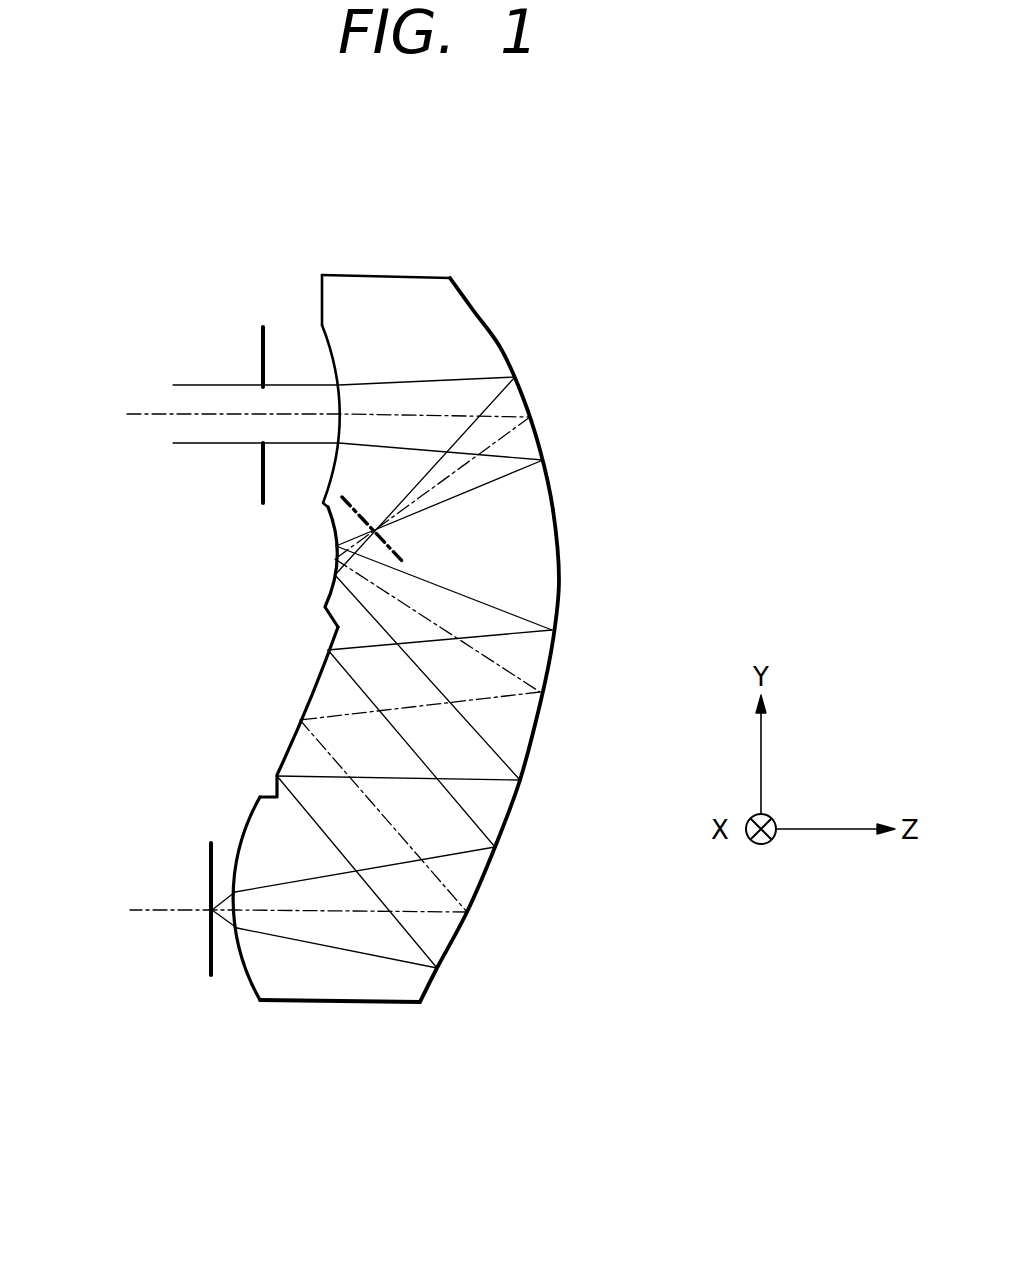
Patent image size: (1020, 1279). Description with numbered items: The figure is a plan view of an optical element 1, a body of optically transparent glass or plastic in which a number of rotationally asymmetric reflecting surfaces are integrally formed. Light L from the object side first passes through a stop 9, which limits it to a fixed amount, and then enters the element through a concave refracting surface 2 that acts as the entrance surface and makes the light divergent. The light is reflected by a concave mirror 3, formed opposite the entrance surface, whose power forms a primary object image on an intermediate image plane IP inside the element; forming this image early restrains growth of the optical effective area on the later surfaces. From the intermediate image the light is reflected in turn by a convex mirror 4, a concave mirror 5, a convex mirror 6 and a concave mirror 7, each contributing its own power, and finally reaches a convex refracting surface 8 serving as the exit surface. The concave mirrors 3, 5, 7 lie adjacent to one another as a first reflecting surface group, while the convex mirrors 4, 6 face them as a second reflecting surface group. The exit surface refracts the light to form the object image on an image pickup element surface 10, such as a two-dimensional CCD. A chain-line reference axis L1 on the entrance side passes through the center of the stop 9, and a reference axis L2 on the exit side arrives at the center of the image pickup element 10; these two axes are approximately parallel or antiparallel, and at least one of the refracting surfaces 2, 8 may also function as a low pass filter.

The optical element 1 is at (422, 660).
The concave refracting surface 2 is at (333, 350).
The concave mirror 3 is at (505, 357).
The convex mirror 4 is at (330, 600).
The concave mirror 5 is at (560, 607).
The convex mirror 6 is at (288, 747).
The concave mirror 7 is at (480, 890).
The convex refracting surface 8 is at (248, 975).
The stop 9 is at (263, 347).
The image pickup element surface 10 is at (210, 957).
The light L is at (190, 385).
The reference axis L1 is at (163, 417).
The reference axis L2 is at (153, 910).
The intermediate image plane IP is at (350, 508).